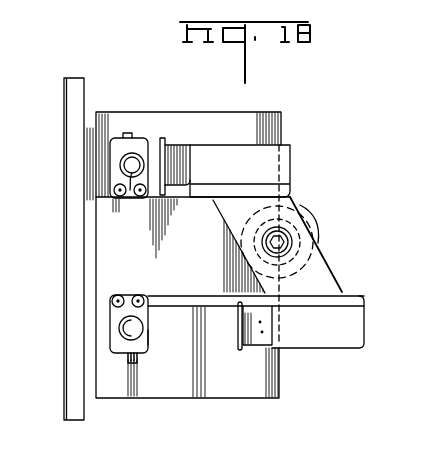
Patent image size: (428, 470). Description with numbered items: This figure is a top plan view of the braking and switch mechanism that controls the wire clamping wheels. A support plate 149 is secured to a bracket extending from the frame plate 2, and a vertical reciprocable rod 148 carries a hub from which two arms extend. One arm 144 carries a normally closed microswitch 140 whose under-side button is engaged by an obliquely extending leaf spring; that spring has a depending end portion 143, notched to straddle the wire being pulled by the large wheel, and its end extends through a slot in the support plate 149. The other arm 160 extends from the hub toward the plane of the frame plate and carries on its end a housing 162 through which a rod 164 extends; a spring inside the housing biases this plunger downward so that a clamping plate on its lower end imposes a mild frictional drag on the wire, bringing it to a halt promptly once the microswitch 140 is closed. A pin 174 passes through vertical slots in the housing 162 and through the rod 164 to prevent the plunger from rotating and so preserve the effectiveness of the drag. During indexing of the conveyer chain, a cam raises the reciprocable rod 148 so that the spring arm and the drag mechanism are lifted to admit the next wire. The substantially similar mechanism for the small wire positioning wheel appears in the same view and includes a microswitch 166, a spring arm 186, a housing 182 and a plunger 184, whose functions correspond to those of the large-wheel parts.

The frame plate 2 is at (65, 408).
The support plate 149 is at (188, 398).
The housing 182 is at (138, 145).
The plunger 184 is at (132, 198).
The spring arm 186 is at (182, 167).
The microswitch 166 is at (266, 160).
The vertical reciprocable rod 148 is at (302, 213).
The arm 144 is at (320, 272).
The arm 160 is at (196, 296).
The microswitch 140 is at (331, 340).
The depending end portion 143 is at (240, 347).
The rod 164 is at (129, 318).
The housing 162 is at (148, 342).
The pin 174 is at (137, 358).